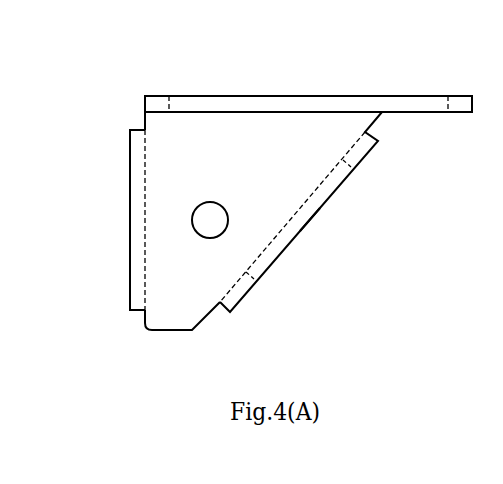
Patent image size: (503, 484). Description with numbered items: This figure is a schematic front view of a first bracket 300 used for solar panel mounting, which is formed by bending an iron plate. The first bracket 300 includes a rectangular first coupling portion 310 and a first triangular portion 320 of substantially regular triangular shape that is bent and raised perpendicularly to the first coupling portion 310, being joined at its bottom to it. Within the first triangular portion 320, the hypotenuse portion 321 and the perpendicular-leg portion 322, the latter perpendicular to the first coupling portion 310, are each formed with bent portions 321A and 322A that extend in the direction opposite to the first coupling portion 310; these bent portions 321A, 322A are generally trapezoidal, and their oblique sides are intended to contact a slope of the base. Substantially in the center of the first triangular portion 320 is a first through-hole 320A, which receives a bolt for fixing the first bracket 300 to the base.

The first bracket 300 is at (431, 76).
The first coupling portion 310 is at (333, 96).
The first triangular portion 320 is at (170, 320).
The first through-hole 320A is at (208, 221).
The hypotenuse portion 321 is at (205, 317).
The bent portion 321A is at (307, 225).
The perpendicular-leg portion 322 is at (141, 318).
The bent portion 322A is at (129, 195).